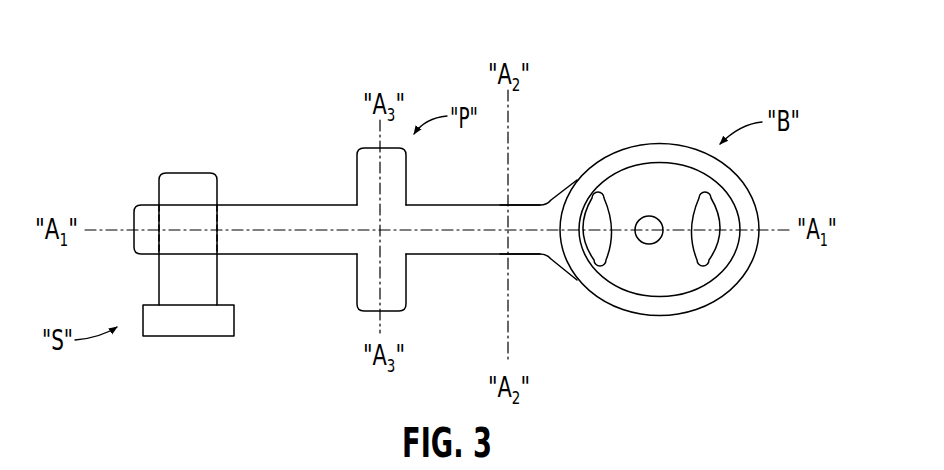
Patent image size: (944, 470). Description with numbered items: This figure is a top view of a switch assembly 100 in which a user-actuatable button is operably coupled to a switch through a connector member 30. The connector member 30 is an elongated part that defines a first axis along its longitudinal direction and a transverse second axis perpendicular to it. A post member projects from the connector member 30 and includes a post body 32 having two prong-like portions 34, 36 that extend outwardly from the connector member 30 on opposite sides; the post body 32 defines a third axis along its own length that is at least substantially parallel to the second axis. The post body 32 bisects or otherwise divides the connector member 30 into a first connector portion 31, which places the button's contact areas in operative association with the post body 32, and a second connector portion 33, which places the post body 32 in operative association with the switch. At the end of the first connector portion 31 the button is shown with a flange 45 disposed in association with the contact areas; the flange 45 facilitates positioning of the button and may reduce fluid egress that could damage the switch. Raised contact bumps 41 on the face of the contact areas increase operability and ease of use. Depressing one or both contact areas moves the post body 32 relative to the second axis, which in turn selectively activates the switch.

The switch assembly 100 is at (186, 37).
The connector member 30 is at (525, 186).
The first connector portion 31 is at (528, 247).
The post body 32 is at (337, 175).
The second connector portion 33 is at (263, 245).
The prong-like portion 34 is at (400, 177).
The prong-like portion 36 is at (400, 280).
The contact bumps 41 is at (603, 258).
The flange 45 is at (647, 153).